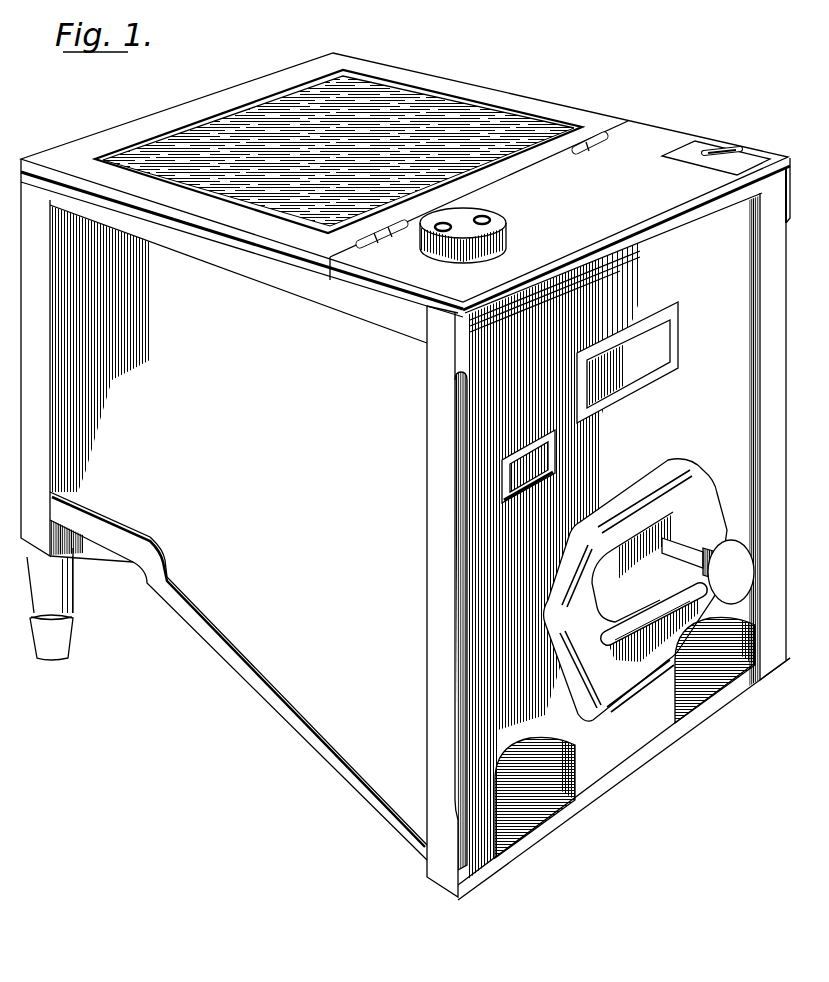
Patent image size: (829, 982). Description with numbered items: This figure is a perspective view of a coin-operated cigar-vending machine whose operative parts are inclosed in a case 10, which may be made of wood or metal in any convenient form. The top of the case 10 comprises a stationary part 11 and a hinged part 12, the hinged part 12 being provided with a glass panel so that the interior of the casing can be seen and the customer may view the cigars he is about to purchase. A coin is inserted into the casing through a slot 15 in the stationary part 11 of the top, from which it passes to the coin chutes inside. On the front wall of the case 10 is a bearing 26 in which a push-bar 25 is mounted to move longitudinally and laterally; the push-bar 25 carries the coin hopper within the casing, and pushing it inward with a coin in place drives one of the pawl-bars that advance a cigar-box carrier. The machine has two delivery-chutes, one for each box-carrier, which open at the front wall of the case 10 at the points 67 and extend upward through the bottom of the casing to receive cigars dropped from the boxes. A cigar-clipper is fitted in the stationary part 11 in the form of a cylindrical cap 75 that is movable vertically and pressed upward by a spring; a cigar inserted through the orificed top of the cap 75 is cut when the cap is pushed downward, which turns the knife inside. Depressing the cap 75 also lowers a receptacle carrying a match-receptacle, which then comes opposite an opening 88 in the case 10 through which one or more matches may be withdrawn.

The case 10 is at (405, 476).
The stationary part 11 is at (482, 190).
The hinged part 12 is at (482, 96).
The slot 15 is at (722, 151).
The push-bar 25 is at (630, 592).
The bearing 26 is at (635, 590).
The delivery-chute openings 67 is at (703, 682).
The cylindrical cap 75 is at (507, 239).
The opening 88 is at (540, 455).